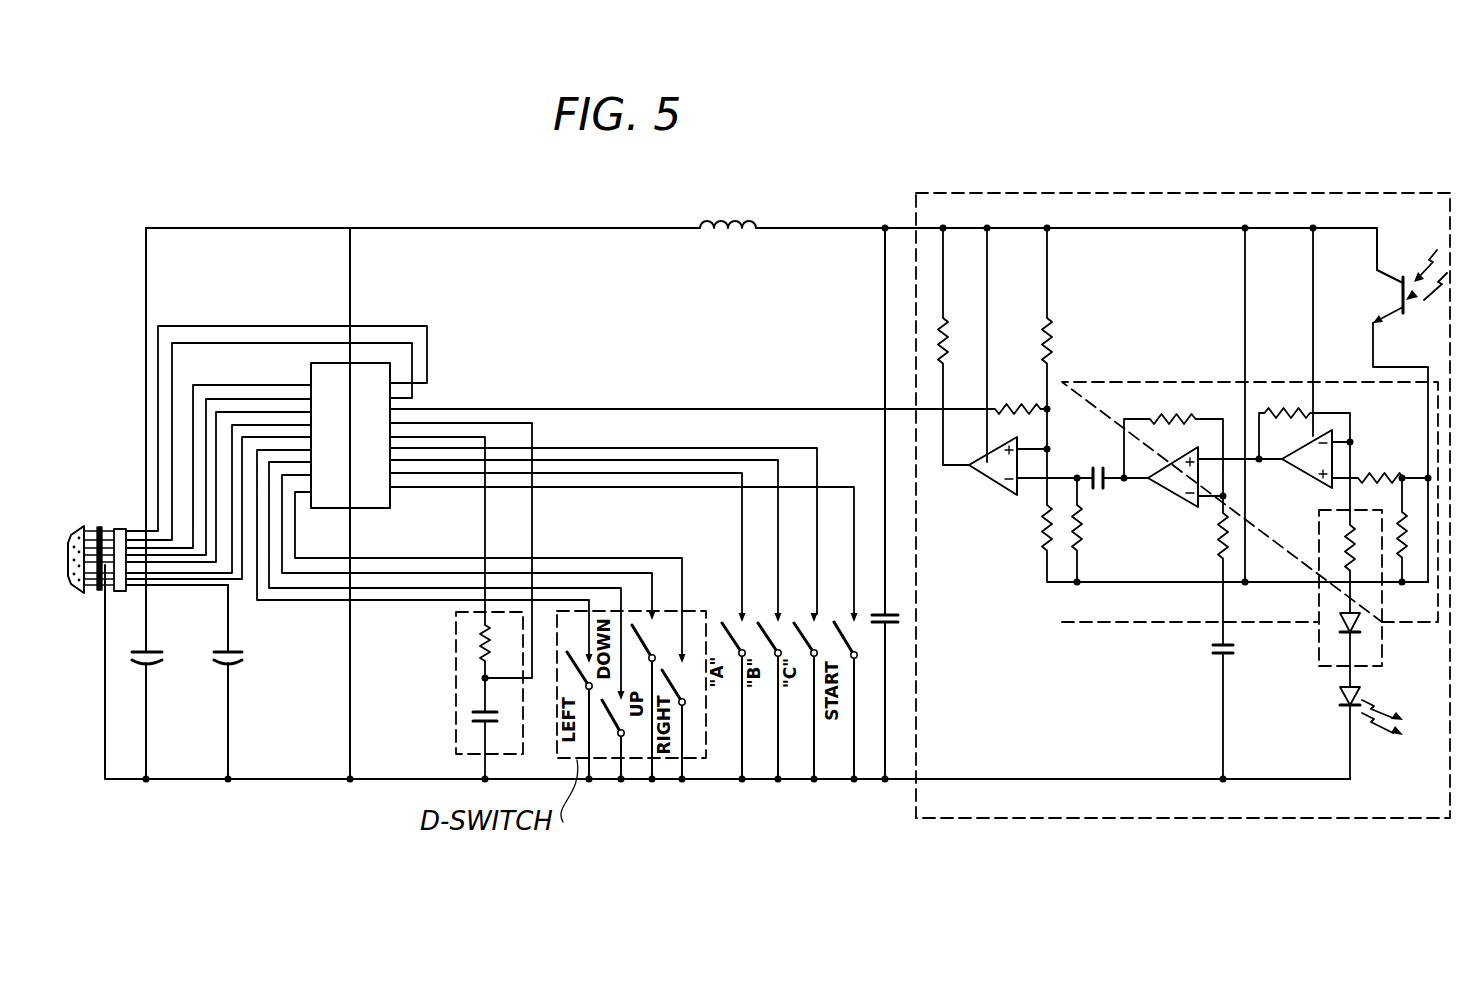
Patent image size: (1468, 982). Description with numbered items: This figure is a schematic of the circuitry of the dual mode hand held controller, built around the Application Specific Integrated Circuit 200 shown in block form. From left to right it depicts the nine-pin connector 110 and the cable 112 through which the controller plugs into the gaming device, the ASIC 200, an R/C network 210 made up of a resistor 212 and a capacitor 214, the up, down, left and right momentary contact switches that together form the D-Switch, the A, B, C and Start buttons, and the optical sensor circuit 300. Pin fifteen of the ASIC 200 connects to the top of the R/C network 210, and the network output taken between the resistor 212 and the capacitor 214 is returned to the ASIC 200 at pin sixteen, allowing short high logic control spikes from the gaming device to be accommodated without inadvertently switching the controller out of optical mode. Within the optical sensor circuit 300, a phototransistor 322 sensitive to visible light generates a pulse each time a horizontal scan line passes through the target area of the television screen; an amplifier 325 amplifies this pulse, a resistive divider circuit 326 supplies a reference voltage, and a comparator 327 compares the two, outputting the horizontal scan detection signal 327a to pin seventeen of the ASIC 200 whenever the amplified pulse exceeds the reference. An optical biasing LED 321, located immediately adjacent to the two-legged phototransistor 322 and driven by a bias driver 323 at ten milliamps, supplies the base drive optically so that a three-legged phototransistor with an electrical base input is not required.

The 9-pin connector 110 is at (73, 527).
The cable 112 is at (103, 512).
The Application Specific Integrated Circuit (ASIC) 200 is at (378, 448).
The R/C network 210 is at (456, 746).
The resistor 212 is at (478, 642).
The capacitor 214 is at (473, 717).
The optical sensor circuit 300 is at (1142, 191).
The optical biasing LED 321 is at (1342, 694).
The phototransistor 322 is at (1399, 275).
The bias driver 323 is at (1318, 635).
The amplifier 325 is at (1152, 380).
The resistive divider circuit 326 is at (1047, 449).
The comparator 327 is at (999, 487).
The horizontal scan detection signal 327a is at (706, 405).